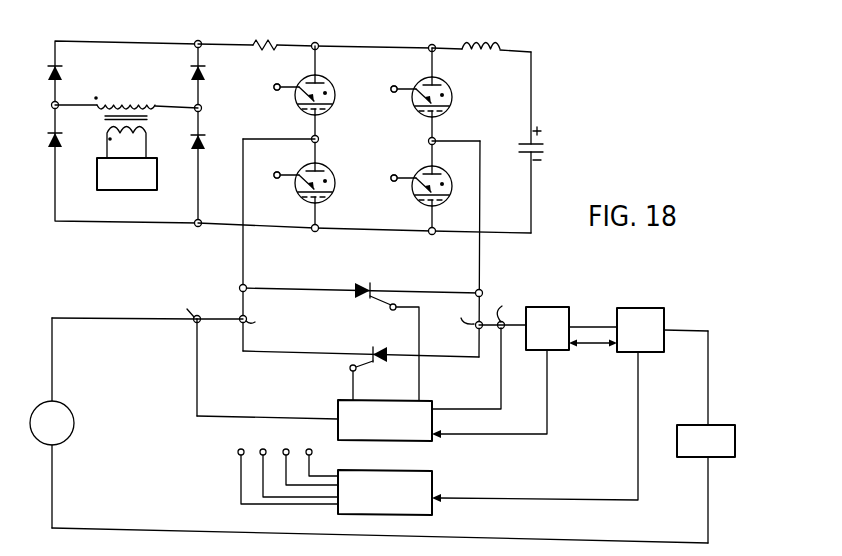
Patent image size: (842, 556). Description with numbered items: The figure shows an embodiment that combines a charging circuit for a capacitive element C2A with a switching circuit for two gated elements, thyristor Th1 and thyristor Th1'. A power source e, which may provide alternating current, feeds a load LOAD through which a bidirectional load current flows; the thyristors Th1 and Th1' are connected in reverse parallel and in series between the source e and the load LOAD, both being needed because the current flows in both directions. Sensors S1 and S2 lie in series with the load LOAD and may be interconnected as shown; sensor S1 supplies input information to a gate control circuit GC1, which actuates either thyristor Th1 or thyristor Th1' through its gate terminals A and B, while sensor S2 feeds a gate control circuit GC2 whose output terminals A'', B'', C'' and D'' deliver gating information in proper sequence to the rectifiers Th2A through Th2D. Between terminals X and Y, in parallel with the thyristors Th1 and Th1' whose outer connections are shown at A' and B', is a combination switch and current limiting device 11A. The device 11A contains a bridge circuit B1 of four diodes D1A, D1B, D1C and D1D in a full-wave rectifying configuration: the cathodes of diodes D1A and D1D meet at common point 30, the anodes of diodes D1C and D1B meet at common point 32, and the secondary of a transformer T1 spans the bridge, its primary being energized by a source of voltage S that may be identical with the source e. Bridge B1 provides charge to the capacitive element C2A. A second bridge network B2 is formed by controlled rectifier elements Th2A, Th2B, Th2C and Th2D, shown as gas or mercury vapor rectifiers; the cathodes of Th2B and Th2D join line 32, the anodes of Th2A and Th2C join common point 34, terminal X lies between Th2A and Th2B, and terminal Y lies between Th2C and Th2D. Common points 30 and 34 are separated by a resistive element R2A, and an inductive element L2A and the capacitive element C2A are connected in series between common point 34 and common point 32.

The bridge circuit B1 is at (139, 33).
The diode D1A is at (68, 74).
The diode D1B is at (210, 137).
The diode D1C is at (46, 138).
The diode D1D is at (189, 76).
The transformer T1 is at (150, 118).
The source of voltage S is at (127, 174).
The common point 30 is at (194, 34).
The common point 32 is at (196, 227).
The common point 34 is at (433, 41).
The resistive element R2A is at (268, 38).
The bridge network B2 is at (384, 34).
The inductive element L2A is at (469, 50).
The capacitive element C2A is at (520, 149).
The controlled rectifier element Th2A is at (336, 99).
The controlled rectifier element Th2B is at (334, 170).
The controlled rectifier element Th2C is at (447, 94).
The controlled rectifier element Th2D is at (461, 199).
The output terminal A'' is at (298, 278).
The output terminal B'' is at (298, 328).
The output terminal C'' is at (326, 290).
The output terminal D'' is at (314, 339).
The combination switch and current limiting device 11A is at (377, 261).
The thyristor Th1 is at (361, 285).
The thyristor Th1' is at (361, 345).
The gate terminal A is at (345, 367).
The gate terminal B is at (397, 318).
The switch terminal A' is at (190, 307).
The switch terminal B' is at (508, 313).
The terminal X is at (254, 313).
The terminal Y is at (465, 317).
The power source e is at (52, 423).
The gate control circuit GC1 is at (385, 420).
The gate control circuit GC2 is at (385, 492).
The sensor S1 is at (547, 328).
The sensor S2 is at (640, 330).
The load LOAD is at (706, 441).